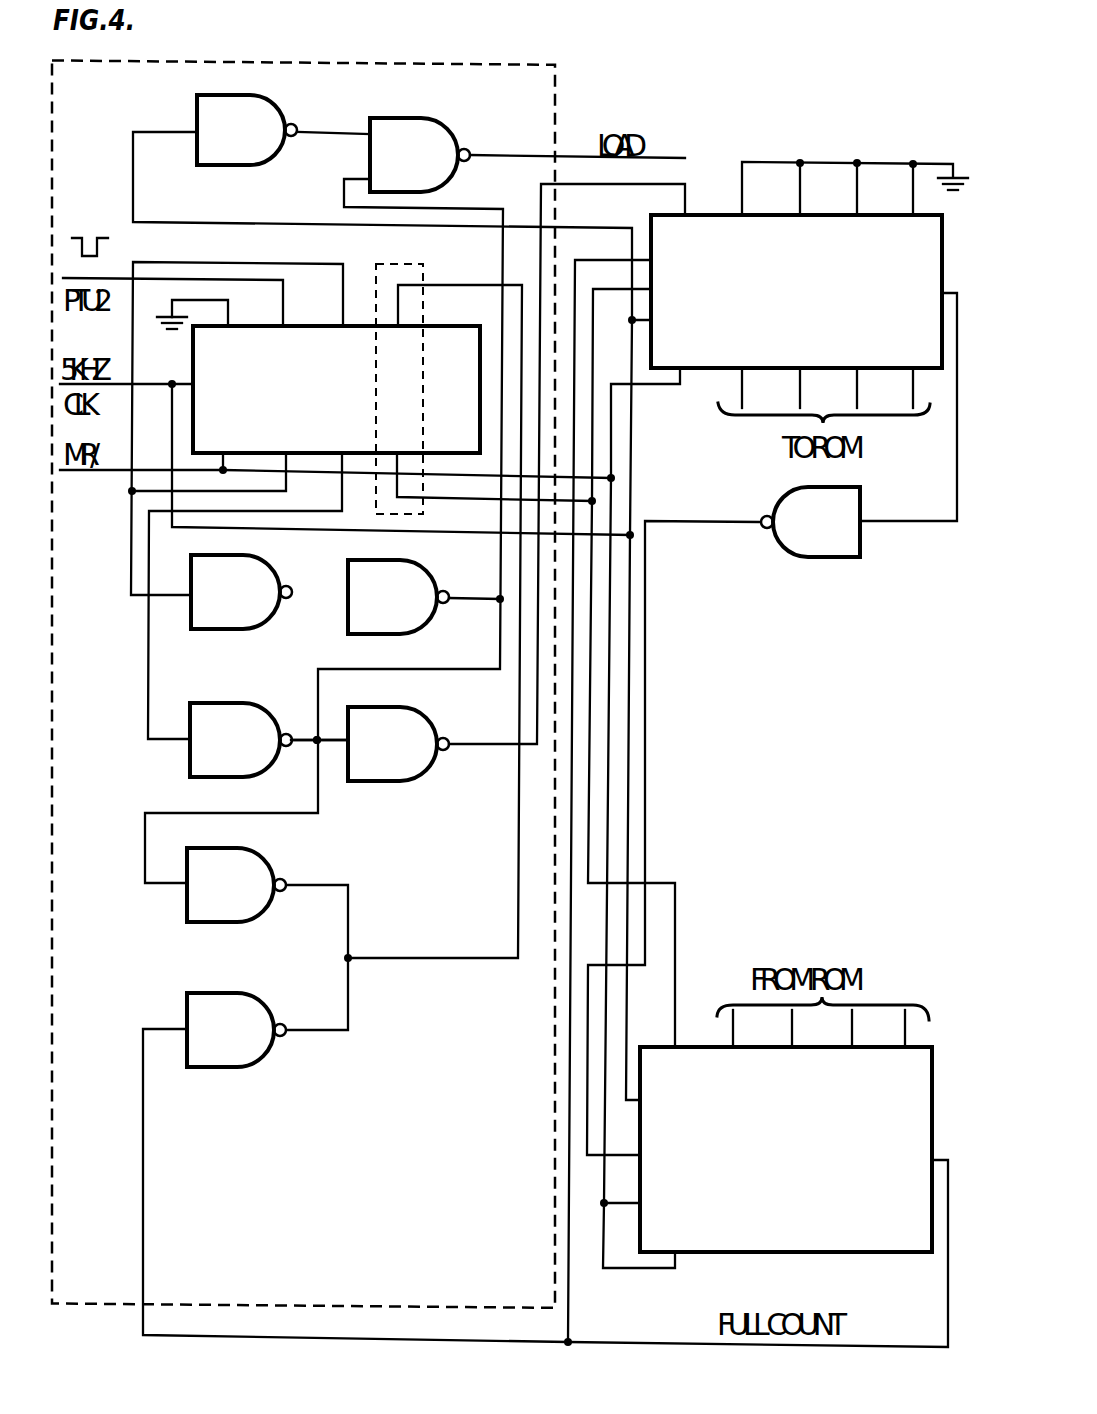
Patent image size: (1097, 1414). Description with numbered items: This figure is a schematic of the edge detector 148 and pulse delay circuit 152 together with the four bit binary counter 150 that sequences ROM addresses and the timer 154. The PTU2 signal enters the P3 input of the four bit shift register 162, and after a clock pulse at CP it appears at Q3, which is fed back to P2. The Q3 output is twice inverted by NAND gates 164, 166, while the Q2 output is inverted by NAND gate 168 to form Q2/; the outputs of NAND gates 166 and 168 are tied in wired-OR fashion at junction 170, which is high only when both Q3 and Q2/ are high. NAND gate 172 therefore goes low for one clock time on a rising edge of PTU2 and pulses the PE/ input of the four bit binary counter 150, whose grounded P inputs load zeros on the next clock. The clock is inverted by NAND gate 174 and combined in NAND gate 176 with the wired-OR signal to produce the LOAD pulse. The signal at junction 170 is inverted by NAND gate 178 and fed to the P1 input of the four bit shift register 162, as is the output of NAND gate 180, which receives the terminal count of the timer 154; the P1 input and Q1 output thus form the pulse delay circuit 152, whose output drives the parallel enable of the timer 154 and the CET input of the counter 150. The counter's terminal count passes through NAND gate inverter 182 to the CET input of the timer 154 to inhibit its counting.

The edge detector 148 is at (565, 110).
The four bit binary counter 150 is at (706, 214).
The pulse delay circuit 152 is at (423, 278).
The timer 154 is at (698, 1047).
The four bit shift register 162 is at (360, 324).
The NAND gate 164 is at (278, 549).
The NAND gate 166 is at (440, 552).
The NAND gate 168 is at (258, 702).
The junction 170 is at (316, 736).
The NAND gate 172 is at (438, 709).
The NAND gate 174 is at (292, 86).
The NAND gate 176 is at (430, 118).
The NAND gate 178 is at (258, 918).
The NAND gate 180 is at (272, 983).
The NAND gate inverter 182 is at (842, 558).